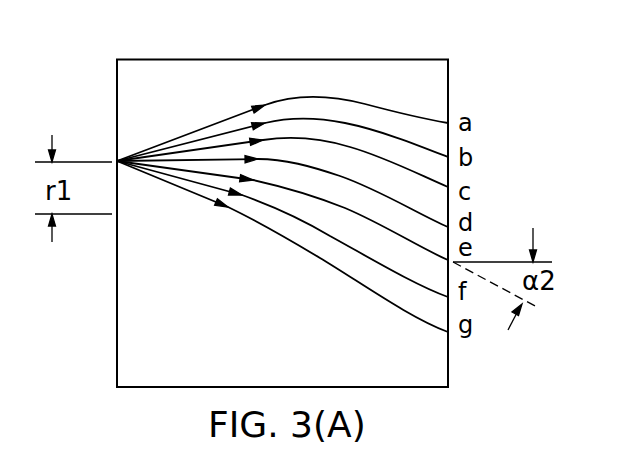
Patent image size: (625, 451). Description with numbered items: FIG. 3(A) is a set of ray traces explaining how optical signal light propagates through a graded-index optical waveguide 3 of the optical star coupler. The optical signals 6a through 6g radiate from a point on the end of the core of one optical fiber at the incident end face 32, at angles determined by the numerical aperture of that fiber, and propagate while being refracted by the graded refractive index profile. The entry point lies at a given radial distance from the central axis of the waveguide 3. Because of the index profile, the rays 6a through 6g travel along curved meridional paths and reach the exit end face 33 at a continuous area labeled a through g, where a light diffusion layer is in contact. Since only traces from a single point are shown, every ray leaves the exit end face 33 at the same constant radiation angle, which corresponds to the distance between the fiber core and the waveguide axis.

The lens body 3 is at (150, 59).
The incident end face 32 is at (116, 97).
The exit end face 33 is at (448, 92).
The optical signal 6a is at (210, 124).
The optical signal 6g is at (253, 220).